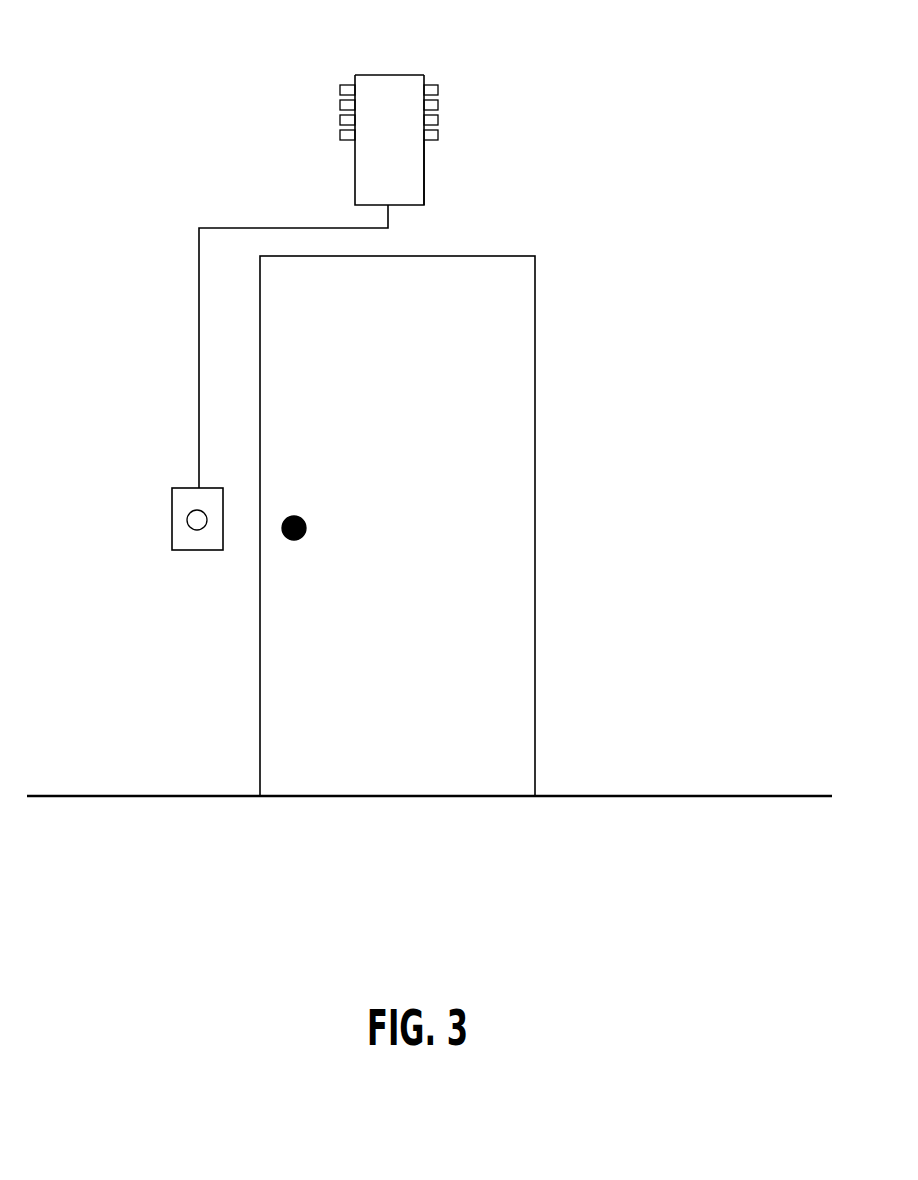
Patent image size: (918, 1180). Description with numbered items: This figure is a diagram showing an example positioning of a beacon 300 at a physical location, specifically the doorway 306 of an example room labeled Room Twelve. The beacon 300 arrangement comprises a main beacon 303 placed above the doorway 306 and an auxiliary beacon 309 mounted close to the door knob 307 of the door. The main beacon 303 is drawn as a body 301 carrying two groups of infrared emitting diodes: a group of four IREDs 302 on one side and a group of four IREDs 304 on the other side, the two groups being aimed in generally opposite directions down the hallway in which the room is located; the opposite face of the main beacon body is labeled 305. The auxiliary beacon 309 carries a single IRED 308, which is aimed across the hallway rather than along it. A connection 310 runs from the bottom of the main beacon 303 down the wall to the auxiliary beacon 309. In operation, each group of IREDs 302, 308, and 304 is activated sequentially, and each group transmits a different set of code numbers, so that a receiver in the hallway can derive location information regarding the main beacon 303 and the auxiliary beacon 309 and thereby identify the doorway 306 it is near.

The beacon 300 is at (298, 107).
The microprocessor chip body 301 is at (324, 140).
The IREDs 302 is at (306, 86).
The main beacon 303 is at (392, 44).
The IREDs 304 is at (479, 88).
The chip side portion 305 is at (481, 172).
The doorway 306 is at (418, 498).
The door knob 307 is at (224, 574).
The IRED 308 is at (146, 546).
The auxiliary beacon 309 is at (154, 503).
The wire connection 310 is at (239, 346).